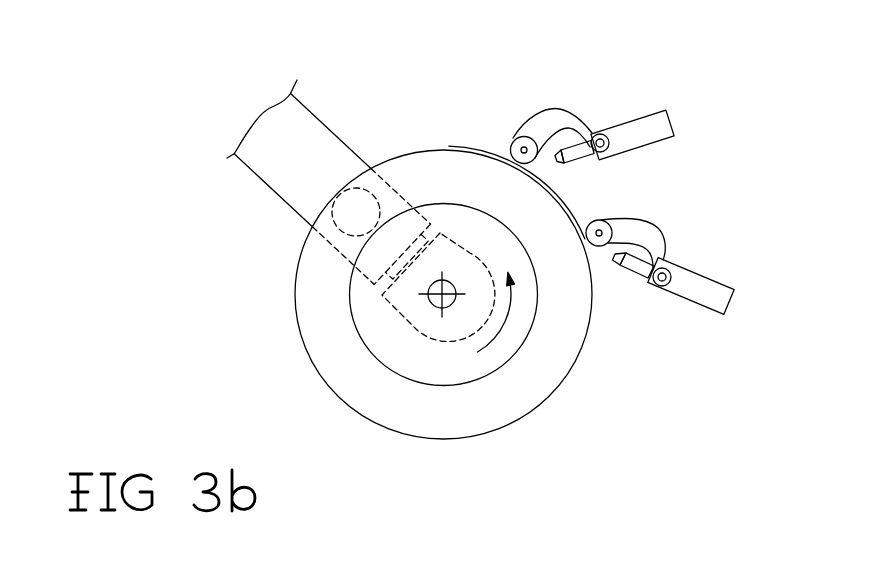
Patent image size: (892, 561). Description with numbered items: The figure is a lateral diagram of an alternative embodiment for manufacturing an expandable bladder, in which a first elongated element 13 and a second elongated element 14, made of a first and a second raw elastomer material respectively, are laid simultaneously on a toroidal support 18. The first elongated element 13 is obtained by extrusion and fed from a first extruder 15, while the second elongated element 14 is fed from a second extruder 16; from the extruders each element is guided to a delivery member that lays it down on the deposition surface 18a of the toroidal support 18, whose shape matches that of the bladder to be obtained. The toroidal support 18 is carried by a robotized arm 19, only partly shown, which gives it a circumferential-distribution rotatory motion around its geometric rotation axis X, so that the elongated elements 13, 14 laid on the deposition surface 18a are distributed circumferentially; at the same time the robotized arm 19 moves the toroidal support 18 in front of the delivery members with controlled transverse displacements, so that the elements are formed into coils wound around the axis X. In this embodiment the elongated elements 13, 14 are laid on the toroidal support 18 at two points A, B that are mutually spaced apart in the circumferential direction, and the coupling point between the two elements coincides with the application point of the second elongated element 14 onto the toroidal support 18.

The first elongated element 13 is at (617, 262).
The second elongated element 14 is at (564, 166).
The first extruder 15 is at (700, 295).
The second extruder 16 is at (653, 124).
The toroidal support 18 is at (366, 346).
The deposition surface 18a is at (308, 306).
The robotized arm 19 is at (335, 117).
The laying point A is at (602, 220).
The laying point B is at (513, 138).
The geometric rotation axis X is at (444, 296).